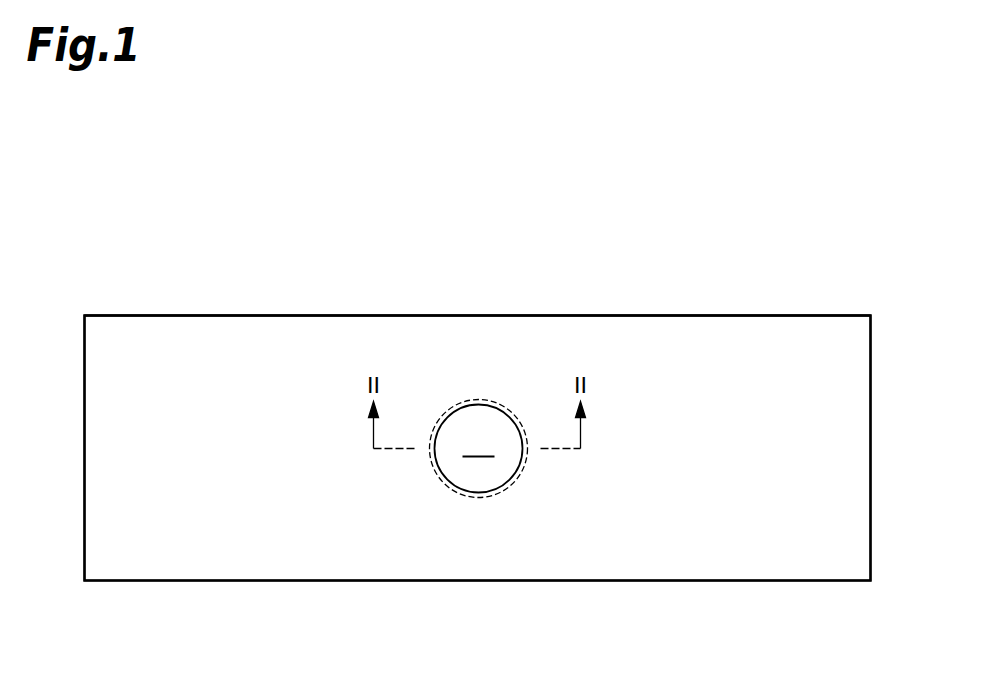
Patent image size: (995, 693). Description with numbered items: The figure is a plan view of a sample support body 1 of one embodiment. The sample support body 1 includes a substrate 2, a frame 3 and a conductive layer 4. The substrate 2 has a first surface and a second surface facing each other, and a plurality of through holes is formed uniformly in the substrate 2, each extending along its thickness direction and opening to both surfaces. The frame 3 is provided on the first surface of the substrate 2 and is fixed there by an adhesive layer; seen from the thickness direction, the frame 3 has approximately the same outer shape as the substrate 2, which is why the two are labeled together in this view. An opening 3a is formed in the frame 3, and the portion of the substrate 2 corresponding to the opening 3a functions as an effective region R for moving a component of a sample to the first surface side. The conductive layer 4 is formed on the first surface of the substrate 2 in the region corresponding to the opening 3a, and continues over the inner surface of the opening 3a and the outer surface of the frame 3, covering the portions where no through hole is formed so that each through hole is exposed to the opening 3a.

The sample support body 1 is at (730, 220).
The substrate 2 is at (478, 486).
The frame 3 is at (700, 581).
The opening 3a is at (447, 460).
The conductive layer 4 is at (248, 327).